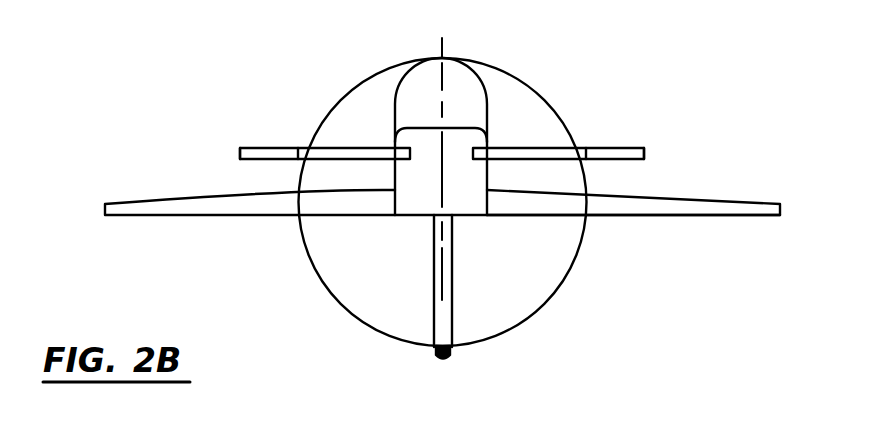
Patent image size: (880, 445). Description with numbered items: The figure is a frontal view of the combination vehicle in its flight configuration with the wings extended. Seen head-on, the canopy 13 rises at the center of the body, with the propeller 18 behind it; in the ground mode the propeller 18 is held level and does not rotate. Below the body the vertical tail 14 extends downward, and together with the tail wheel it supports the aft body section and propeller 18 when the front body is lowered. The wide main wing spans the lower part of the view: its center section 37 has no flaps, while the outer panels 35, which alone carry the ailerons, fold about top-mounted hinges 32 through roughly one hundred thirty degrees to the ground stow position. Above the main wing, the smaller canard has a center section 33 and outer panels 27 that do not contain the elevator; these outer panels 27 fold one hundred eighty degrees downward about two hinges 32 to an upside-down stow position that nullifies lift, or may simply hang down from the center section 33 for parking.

The canopy 13 is at (453, 82).
The vertical tail 14 is at (433, 318).
The propeller 18 is at (333, 108).
The canard wing outer panels 27 is at (630, 153).
The hinges 32 is at (300, 192).
The canard center section 33 is at (542, 155).
The main wing outer panels 35 is at (717, 208).
The main wing center section 37 is at (558, 205).